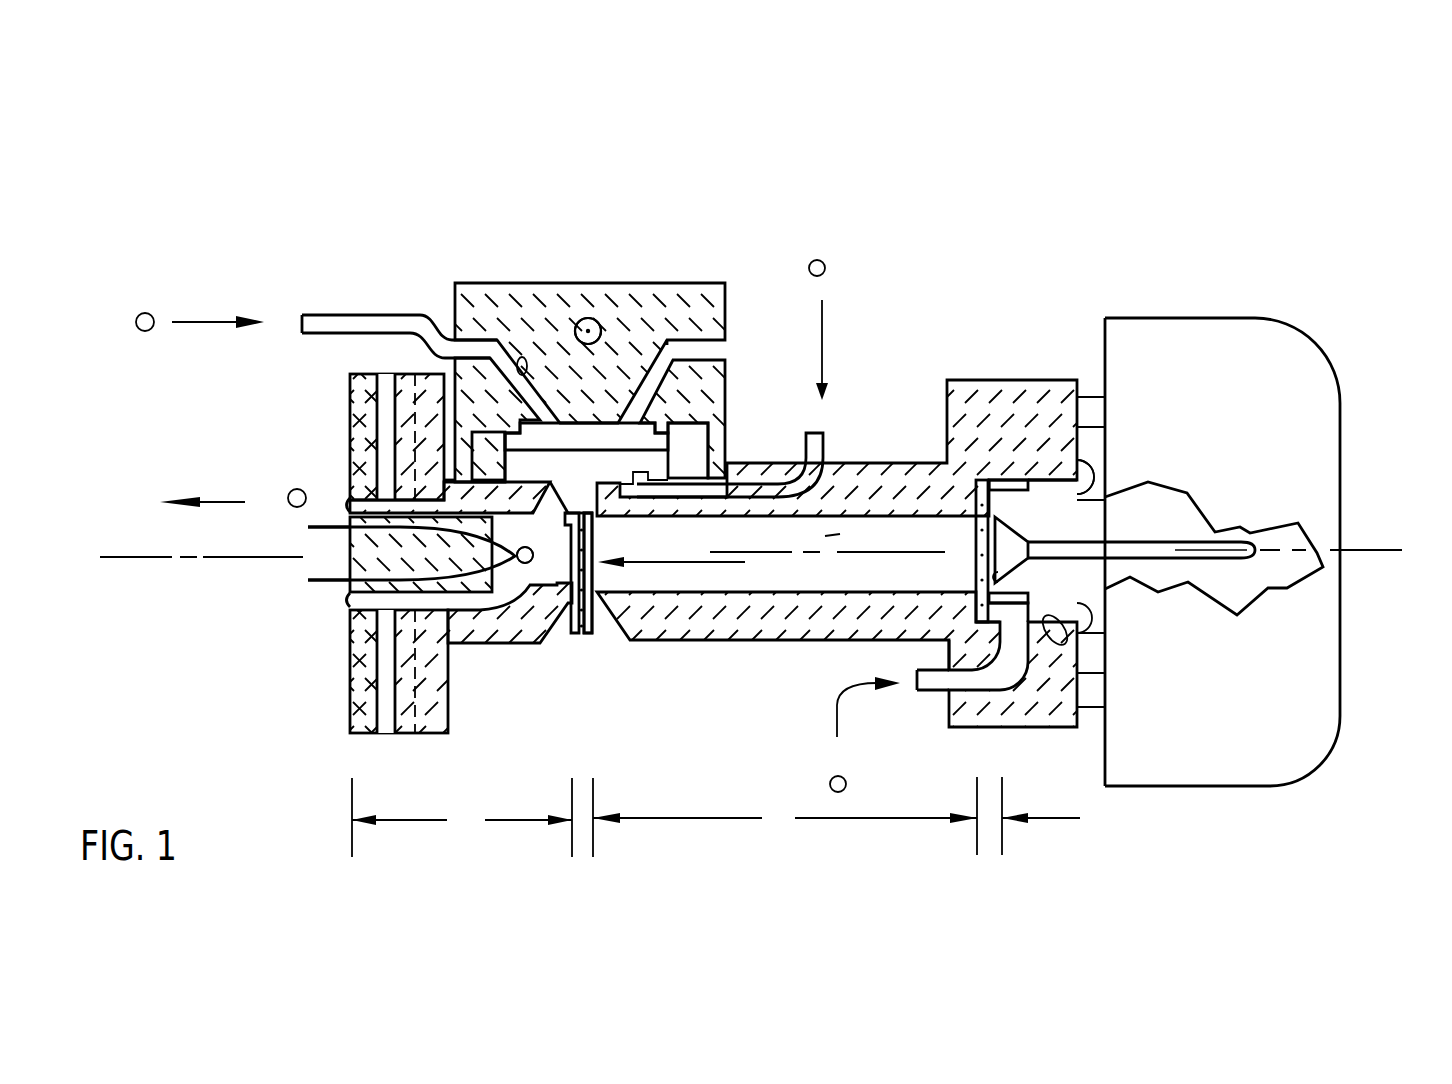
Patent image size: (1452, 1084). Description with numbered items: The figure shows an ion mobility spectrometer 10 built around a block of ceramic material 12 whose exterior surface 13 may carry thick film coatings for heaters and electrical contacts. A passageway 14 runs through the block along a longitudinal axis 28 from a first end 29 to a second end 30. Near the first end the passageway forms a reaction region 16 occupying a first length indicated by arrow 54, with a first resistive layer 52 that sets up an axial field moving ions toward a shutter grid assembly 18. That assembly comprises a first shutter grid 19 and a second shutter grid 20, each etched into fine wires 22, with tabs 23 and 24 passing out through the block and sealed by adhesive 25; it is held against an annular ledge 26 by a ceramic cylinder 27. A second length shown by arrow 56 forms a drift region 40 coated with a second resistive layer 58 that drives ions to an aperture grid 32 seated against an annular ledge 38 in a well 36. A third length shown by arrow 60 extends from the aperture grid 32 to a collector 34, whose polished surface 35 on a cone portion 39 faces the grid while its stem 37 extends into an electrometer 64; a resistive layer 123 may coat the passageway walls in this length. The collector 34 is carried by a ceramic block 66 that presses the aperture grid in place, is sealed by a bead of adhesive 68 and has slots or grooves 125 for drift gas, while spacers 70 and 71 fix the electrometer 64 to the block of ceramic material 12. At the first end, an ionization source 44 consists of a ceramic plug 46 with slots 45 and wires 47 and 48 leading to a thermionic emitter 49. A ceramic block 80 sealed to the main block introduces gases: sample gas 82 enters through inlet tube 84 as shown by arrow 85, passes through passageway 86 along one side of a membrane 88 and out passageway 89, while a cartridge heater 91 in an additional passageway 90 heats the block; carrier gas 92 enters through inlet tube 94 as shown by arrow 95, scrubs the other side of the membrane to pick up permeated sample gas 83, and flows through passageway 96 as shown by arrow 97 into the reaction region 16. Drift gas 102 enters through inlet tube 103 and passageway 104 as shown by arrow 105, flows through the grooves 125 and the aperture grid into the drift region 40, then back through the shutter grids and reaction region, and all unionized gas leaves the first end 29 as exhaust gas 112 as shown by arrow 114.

The ion mobility spectrometer 10 is at (737, 200).
The block of ceramic material 12 is at (724, 664).
The exterior surface 13 is at (787, 643).
The passageway 14 is at (818, 580).
The reaction region 16 is at (508, 578).
The shutter grid assembly 18 is at (597, 577).
The first shutter grid 19 is at (540, 585).
The second shutter grid 20 is at (687, 590).
The wires 22 is at (597, 545).
The tab 23 is at (575, 637).
The tab 24 is at (590, 634).
The adhesive 25 is at (575, 636).
The annular ledge 26 is at (597, 532).
The ceramic cylinder 27 is at (562, 636).
The longitudinal axis 28 is at (122, 562).
The first end 29 is at (347, 600).
The second end 30 is at (1163, 646).
The aperture grid 32 is at (967, 528).
The collector 34 is at (1103, 607).
The polished surface 35 is at (997, 578).
The well 36 is at (1163, 646).
The stem 37 is at (1182, 540).
The annular ledge 38 is at (949, 640).
The cone portion 39 is at (1000, 520).
The drift region 40 is at (838, 532).
The ionization source 44 is at (401, 570).
The slots 45 is at (345, 505).
The ceramic plug 46 is at (462, 700).
The wire 47 is at (327, 527).
The wire 48 is at (330, 582).
The thermionic emitter 49 is at (524, 563).
The first resistive layer 52 is at (530, 600).
The arrow 54 is at (513, 820).
The arrow 56 is at (870, 818).
The second resistive layer 58 is at (943, 516).
The arrow 60 is at (987, 840).
The electrometer 64 is at (1340, 730).
The ceramic block 66 is at (1107, 500).
The bead of adhesive 68 is at (1085, 497).
The spacer 70 is at (1095, 397).
The spacer 71 is at (1100, 710).
The ceramic block 80 is at (547, 283).
The sample gas 82 is at (150, 331).
The sample gas 83 is at (549, 460).
The inlet tube 84 is at (352, 315).
The arrow 85 is at (198, 325).
The passageway 86 is at (522, 357).
The membrane 88 is at (627, 446).
The passageway 89 is at (710, 342).
The additional passageway 90 is at (588, 318).
The cartridge heater 91 is at (600, 322).
The carrier gas 92 is at (826, 265).
The inlet tube 94 is at (830, 448).
The arrow 95 is at (826, 320).
The passageway 96 is at (559, 535).
The arrow 97 is at (550, 525).
The drift gas 102 is at (830, 784).
The inlet tube 103 is at (935, 692).
The passageway 104 is at (1000, 680).
The arrow 105 is at (837, 737).
The exhaust gas 112 is at (291, 492).
The arrow 114 is at (217, 502).
The resistive layer 123 is at (1077, 633).
The slots or grooves 125 is at (997, 502).